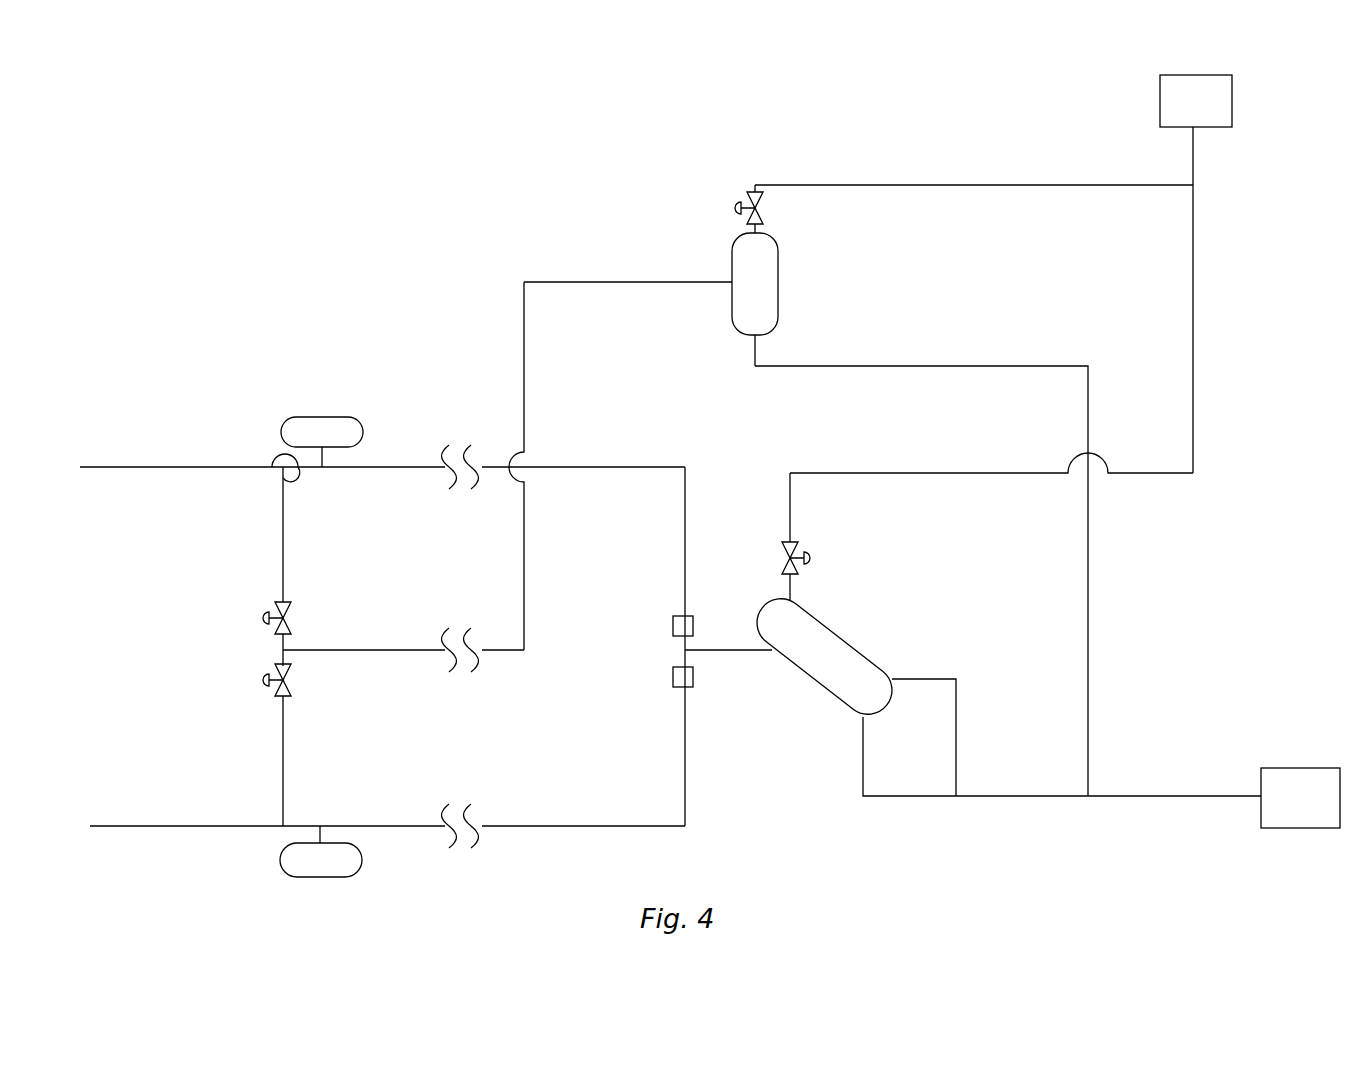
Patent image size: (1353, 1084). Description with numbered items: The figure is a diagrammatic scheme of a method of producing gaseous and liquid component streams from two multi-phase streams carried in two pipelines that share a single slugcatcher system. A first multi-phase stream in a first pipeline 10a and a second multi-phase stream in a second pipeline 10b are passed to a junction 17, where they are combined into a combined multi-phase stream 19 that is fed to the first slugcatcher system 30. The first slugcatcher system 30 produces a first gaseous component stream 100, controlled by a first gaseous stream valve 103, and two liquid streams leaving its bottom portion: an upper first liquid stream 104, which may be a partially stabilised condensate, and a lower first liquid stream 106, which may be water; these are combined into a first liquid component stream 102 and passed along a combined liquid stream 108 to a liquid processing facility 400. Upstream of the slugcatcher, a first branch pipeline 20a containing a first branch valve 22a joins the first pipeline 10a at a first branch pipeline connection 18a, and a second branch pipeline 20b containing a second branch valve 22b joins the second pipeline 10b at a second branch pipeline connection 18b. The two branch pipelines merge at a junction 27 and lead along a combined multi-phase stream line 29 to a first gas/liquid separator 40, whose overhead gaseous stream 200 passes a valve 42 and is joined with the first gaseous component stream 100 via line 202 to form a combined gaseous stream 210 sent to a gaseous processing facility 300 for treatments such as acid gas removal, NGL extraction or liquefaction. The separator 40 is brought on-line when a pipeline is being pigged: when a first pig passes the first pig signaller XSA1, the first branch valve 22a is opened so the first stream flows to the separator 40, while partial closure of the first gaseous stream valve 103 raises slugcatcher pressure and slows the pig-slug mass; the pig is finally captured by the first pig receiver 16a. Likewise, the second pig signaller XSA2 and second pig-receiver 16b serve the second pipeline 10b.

The first pipeline 10a is at (135, 828).
The second pipeline 10b is at (113, 470).
The first branch pipeline connection 18a is at (281, 828).
The second branch pipeline connection 18b is at (268, 463).
The first pig signaller XSA1 is at (321, 851).
The second pig signaller XSA2 is at (322, 441).
The first branch pipeline 20a is at (285, 762).
The second branch pipeline 20b is at (285, 540).
The first branch valve 22a is at (293, 679).
The second branch valve 22b is at (293, 621).
The junction 27 is at (283, 651).
The combined multi-phase stream line 29 is at (526, 556).
The first pig receiver 16a is at (670, 684).
The second pig-receiver 16b is at (670, 620).
The junction 17 is at (680, 650).
The combined multi-phase stream 19 is at (738, 653).
The first slugcatcher system 30 is at (848, 648).
The first gas/liquid separator 40 is at (778, 282).
The valve 42 is at (765, 205).
The first gaseous component stream 100 is at (950, 477).
The first liquid component stream 102 is at (1013, 798).
The first gaseous stream valve 103 is at (783, 550).
The upper first liquid stream 104 is at (935, 679).
The lower first liquid stream 106 is at (912, 798).
The combined liquid stream 108 is at (1173, 795).
The overhead gaseous stream 200 is at (927, 183).
The line 202 is at (990, 362).
The combined gaseous stream 210 is at (1194, 150).
The gaseous processing facility 300 is at (1196, 101).
The liquid processing facility 400 is at (1300, 798).